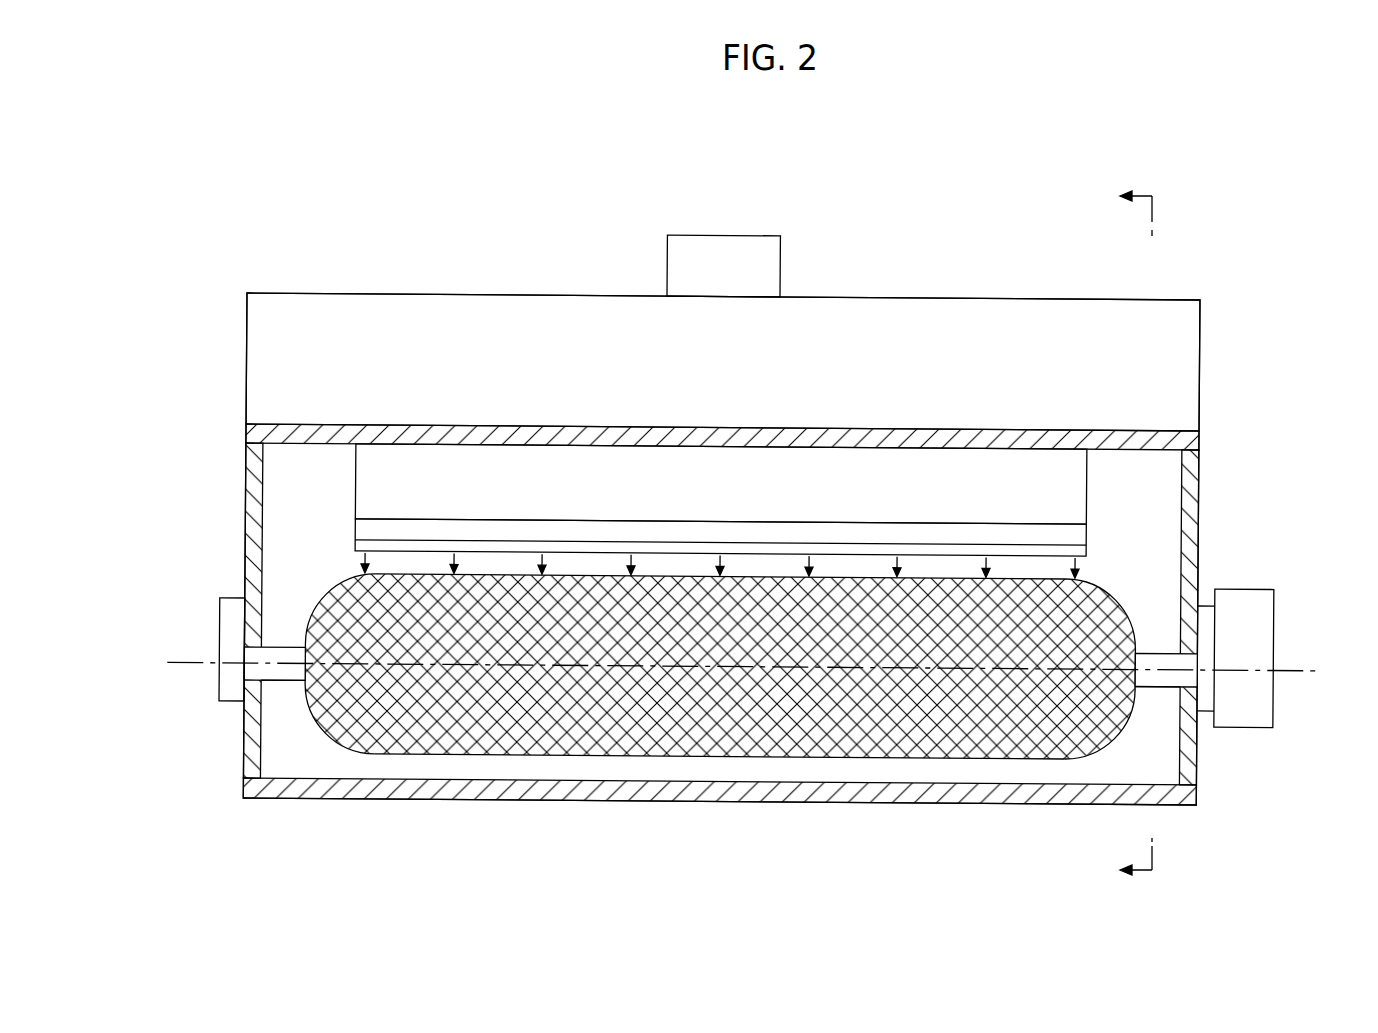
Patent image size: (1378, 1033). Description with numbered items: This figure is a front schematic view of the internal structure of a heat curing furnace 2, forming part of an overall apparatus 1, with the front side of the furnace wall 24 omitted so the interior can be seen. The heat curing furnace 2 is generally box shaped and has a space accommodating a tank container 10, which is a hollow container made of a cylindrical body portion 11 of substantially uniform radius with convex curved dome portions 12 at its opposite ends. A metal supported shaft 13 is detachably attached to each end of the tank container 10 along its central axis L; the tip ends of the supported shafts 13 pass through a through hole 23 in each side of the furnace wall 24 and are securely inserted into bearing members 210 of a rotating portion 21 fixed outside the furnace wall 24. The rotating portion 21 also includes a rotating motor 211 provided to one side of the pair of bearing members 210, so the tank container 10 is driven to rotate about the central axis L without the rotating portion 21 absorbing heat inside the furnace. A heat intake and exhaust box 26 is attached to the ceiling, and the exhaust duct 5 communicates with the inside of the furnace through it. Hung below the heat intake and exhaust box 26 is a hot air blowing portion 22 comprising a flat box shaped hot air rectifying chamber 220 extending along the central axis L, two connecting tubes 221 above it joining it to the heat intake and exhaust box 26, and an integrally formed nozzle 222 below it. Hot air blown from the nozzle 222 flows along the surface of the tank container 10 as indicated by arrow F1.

The fixing device 1 is at (1224, 216).
The heat curing furnace 2 is at (1205, 362).
The exhaust duct 5 is at (741, 262).
The tank container 10 is at (928, 768).
The body portion 11 is at (730, 758).
The dome portion 12 is at (320, 740).
The supported shaft 13 is at (290, 682).
The rotating portion 21 is at (1282, 600).
The hot air blowing portion 22 is at (348, 472).
The through hole 23 is at (255, 645).
The furnace wall 24 is at (247, 490).
The heat intake and exhaust box 26 is at (247, 358).
The bearing member 210 is at (235, 613).
The rotating motor 211 is at (1268, 700).
The hot air rectifying chamber 220 is at (357, 497).
The connecting tube 221 is at (521, 432).
The nozzle 222 is at (357, 532).
The arrow F1 is at (1000, 562).
The central axis L is at (755, 673).